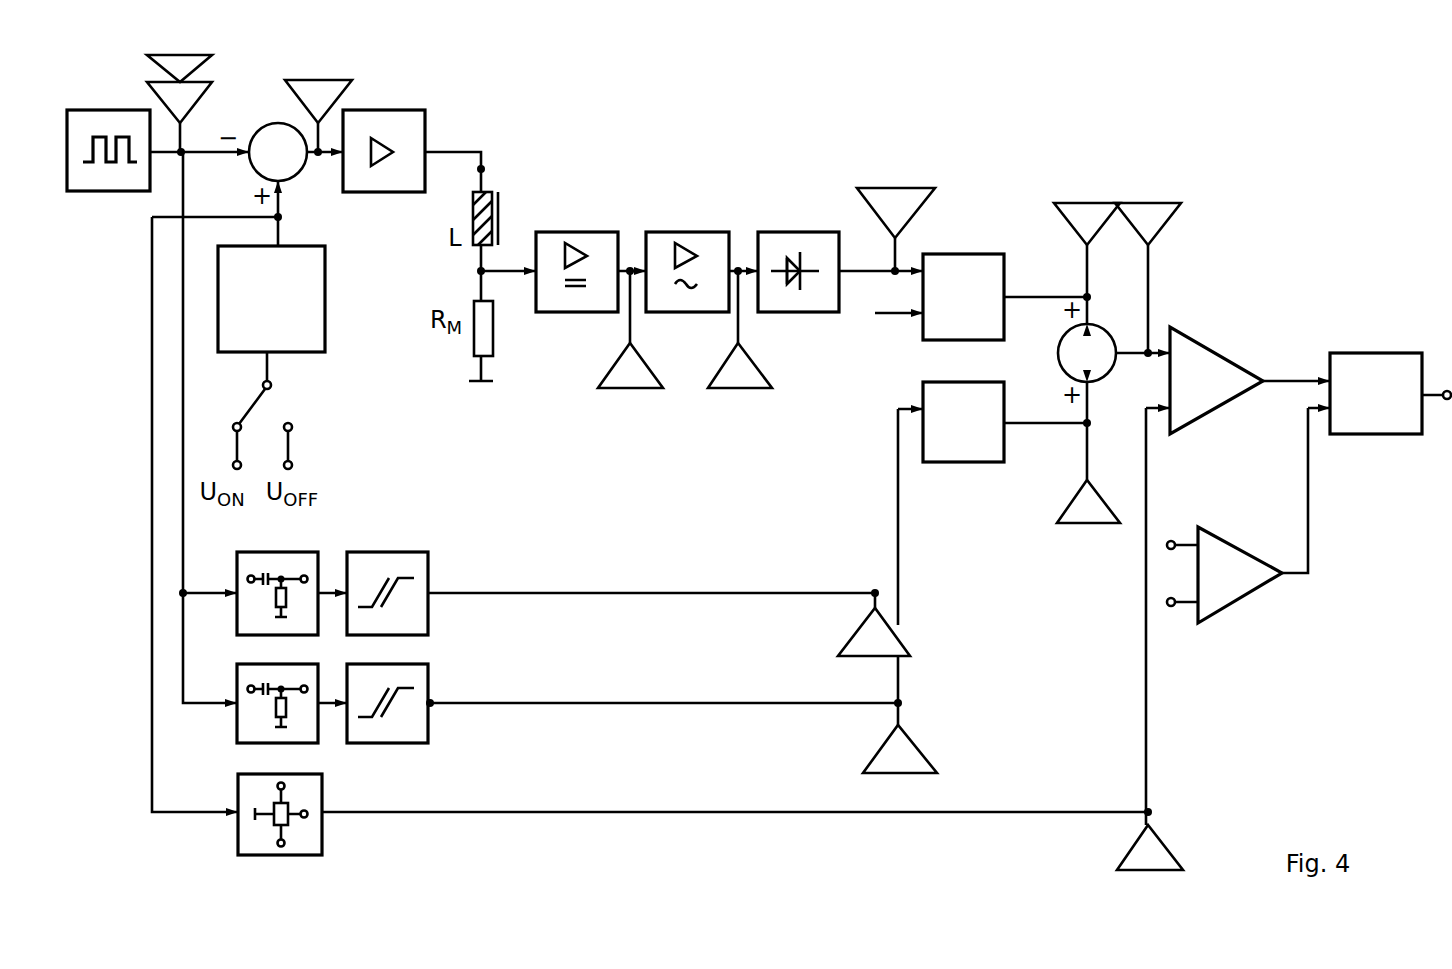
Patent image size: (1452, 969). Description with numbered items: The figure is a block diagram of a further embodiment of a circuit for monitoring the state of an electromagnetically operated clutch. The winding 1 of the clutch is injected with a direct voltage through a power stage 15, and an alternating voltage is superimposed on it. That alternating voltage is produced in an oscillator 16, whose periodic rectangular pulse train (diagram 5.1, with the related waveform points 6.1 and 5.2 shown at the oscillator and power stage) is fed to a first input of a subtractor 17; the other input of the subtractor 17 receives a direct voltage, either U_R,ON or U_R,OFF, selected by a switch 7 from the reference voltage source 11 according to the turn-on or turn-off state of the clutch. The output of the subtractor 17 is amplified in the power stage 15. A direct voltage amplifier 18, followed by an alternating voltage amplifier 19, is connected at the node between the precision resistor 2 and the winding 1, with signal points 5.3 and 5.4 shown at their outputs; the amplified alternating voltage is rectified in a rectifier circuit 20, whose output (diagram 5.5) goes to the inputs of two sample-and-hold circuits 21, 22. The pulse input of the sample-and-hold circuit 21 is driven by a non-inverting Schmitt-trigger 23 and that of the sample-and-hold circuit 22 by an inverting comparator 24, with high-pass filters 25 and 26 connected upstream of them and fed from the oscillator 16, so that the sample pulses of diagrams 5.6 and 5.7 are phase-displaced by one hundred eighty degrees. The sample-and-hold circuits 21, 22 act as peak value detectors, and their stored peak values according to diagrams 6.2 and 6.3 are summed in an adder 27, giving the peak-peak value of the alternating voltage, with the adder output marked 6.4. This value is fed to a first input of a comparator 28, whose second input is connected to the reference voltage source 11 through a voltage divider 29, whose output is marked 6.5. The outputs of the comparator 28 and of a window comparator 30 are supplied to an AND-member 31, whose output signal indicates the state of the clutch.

The winding 1 is at (488, 190).
The precision resistor 2 is at (492, 345).
The switch 7 is at (255, 403).
The reference voltage source 11 is at (312, 292).
The power stage 15 is at (410, 139).
The oscillator 16 is at (118, 120).
The subtractor 17 is at (278, 140).
The direct voltage amplifier 18 is at (596, 242).
The alternating voltage amplifier 19 is at (712, 242).
The rectifier circuit 20 is at (824, 242).
The sample-and-hold circuit 21 is at (988, 267).
The sample-and-hold circuit 22 is at (963, 452).
The non-inverting Schmitt-trigger 23 is at (418, 560).
The inverting comparator 24 is at (417, 732).
The high-pass filter 25 is at (250, 562).
The high-pass filter 26 is at (260, 730).
The adder 27 is at (1095, 350).
The comparator 28 is at (1217, 380).
The voltage divider 29 is at (308, 848).
The window comparator 30 is at (1218, 558).
The AND-member 31 is at (1383, 377).
The diagram 5.1 is at (179, 102).
The signal terminal 5.2 is at (318, 101).
The signal terminal 5.3 is at (630, 366).
The diagram 5.4 is at (740, 366).
The diagram 5.5 is at (896, 213).
The diagram 5.6 is at (874, 633).
The diagram 5.7 is at (900, 750).
The signal terminal 6.1 is at (179, 69).
The diagram 6.2 is at (1087, 224).
The diagram 6.3 is at (1088, 502).
The signal terminal 6.4 is at (1148, 224).
The signal terminal 6.5 is at (1150, 848).